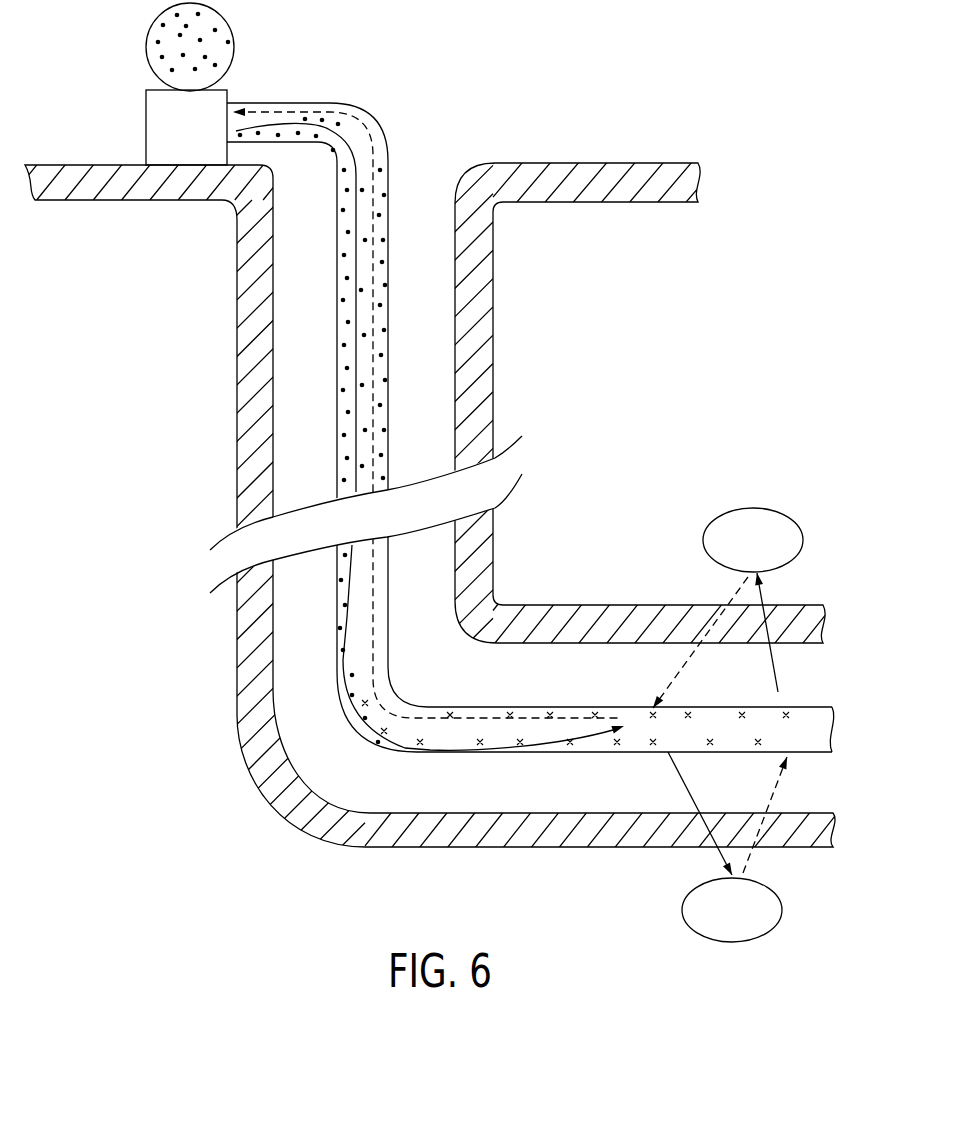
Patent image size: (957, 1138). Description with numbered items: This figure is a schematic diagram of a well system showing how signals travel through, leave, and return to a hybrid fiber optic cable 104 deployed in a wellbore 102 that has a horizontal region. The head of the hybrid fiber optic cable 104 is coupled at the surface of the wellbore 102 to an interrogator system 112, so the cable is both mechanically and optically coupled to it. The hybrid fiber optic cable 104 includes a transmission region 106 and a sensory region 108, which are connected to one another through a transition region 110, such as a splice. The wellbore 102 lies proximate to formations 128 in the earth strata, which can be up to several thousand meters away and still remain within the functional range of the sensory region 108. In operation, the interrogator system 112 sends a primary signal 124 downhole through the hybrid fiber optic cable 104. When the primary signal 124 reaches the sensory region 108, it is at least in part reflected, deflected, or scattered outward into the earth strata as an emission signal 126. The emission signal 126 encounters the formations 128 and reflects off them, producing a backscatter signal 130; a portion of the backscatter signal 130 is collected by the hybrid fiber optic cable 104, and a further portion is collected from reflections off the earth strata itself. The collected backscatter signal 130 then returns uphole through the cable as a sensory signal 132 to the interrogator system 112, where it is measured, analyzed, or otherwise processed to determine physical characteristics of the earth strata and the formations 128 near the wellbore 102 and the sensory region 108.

The wellbore 102 is at (428, 168).
The hybrid fiber optic cable 104 is at (341, 108).
The transmission region 106 is at (345, 365).
The sensory region 108 is at (670, 738).
The transition region 110 is at (402, 727).
The interrogator system 112 is at (152, 131).
The primary signal 124 is at (353, 440).
The emission signal 126 is at (777, 670).
The formations 128 is at (767, 554).
The backscatter signal 130 is at (698, 652).
The sensory signal 132 is at (377, 313).